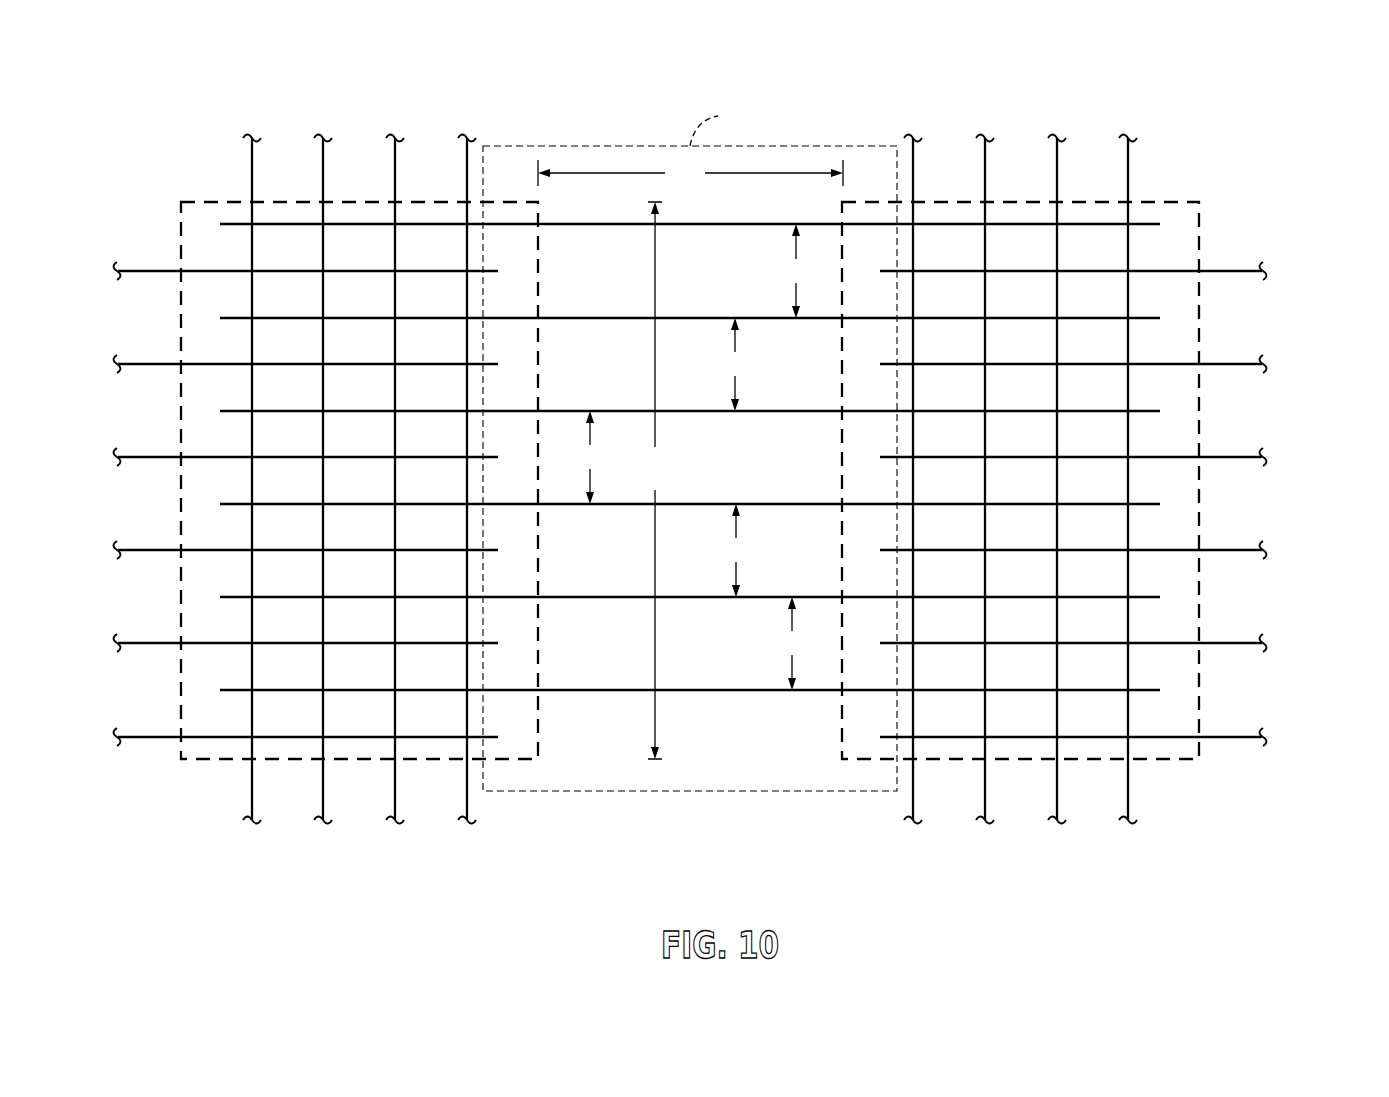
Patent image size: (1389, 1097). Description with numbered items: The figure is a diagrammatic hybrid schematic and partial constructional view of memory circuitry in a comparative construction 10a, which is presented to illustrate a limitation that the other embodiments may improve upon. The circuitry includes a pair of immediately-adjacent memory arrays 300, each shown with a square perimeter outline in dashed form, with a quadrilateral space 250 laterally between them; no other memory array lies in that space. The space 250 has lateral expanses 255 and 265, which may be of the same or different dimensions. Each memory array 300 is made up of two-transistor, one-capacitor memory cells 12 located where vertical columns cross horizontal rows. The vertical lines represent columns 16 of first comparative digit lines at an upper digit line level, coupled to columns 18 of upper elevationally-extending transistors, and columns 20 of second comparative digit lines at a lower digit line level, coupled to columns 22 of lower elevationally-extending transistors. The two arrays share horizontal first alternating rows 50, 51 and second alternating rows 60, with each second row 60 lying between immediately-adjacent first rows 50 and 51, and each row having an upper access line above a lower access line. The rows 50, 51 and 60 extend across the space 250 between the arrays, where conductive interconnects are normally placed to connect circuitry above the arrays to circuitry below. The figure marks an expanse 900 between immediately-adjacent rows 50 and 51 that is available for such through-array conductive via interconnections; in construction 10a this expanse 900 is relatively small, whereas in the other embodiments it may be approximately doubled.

The construction 10a is at (1292, 90).
The memory cell 12 is at (372, 224).
The columns of first comparative digit lines 16 is at (690, 481).
The columns of second comparative digit lines 20 is at (1128, 118).
The columns of upper elevationally-extending transistors 18 is at (690, 515).
The columns of lower elevationally-extending transistors 22 is at (1128, 848).
The first alternating row 50 is at (96, 224).
The first alternating row 51 is at (96, 318).
The second alternating row 60 is at (76, 271).
The memory array 300 is at (210, 198).
The space 250 is at (705, 752).
The lateral expanse 255 is at (690, 173).
The lateral expanse 265 is at (655, 480).
The expanse 900 is at (693, 457).